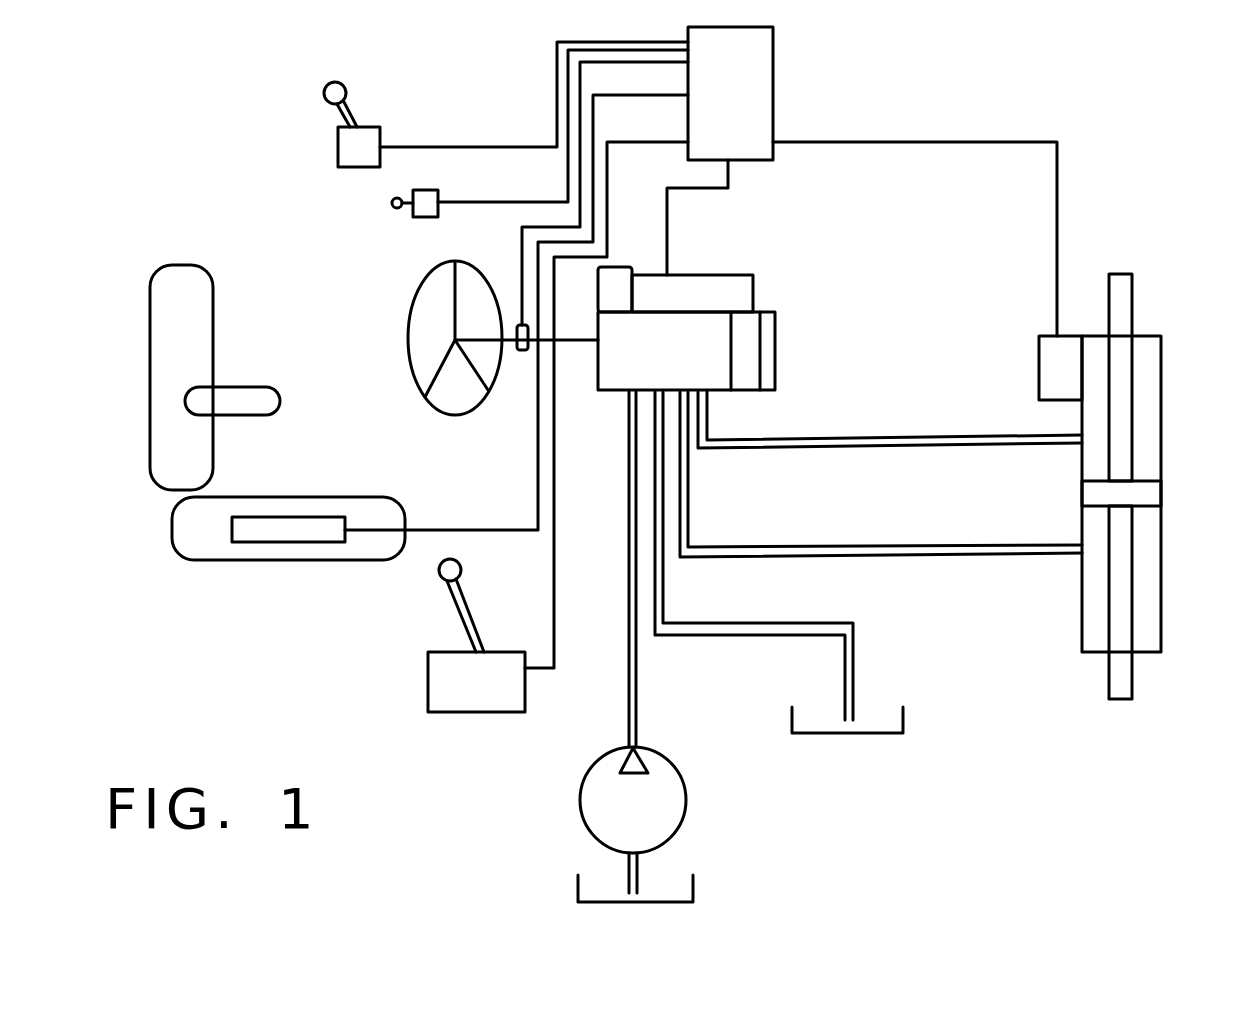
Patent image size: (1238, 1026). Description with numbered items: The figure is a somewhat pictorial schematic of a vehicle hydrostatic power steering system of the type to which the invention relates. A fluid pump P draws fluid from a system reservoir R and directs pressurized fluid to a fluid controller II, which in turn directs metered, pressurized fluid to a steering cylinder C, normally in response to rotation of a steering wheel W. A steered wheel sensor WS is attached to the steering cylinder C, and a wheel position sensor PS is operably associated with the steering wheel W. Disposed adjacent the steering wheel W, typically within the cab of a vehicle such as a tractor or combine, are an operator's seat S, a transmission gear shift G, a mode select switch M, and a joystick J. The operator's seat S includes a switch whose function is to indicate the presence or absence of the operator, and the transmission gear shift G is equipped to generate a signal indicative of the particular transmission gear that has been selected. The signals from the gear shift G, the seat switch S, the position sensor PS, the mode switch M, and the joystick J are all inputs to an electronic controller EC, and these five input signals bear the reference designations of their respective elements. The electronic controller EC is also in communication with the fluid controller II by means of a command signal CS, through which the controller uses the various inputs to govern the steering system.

The electronic controller EC is at (765, 87).
The joystick J is at (380, 127).
The mode select switch M is at (425, 190).
The command signal CS is at (667, 235).
The steering wheel W is at (482, 336).
The wheel position sensor PS is at (522, 350).
The fluid controller II is at (786, 346).
The steered wheel sensor WS is at (1039, 366).
The steering cylinder C is at (1161, 380).
The operator's seat S is at (321, 472).
The transmission gear shift G is at (440, 683).
The fluid pump P is at (678, 763).
The system reservoir R is at (693, 890).